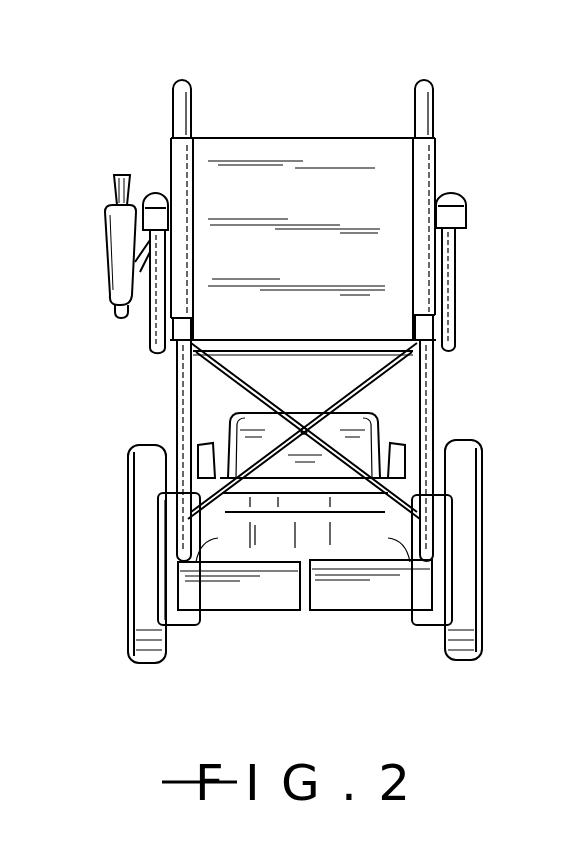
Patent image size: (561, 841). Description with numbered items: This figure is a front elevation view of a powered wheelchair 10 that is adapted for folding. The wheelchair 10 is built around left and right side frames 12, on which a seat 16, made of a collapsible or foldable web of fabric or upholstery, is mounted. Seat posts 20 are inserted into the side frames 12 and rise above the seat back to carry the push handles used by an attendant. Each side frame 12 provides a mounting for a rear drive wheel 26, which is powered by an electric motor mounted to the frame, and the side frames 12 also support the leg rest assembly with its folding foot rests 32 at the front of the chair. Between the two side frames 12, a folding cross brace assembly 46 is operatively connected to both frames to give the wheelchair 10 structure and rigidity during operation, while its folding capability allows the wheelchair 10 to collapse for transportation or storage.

The wheelchair 10 is at (388, 66).
The side frames 12 is at (176, 407).
The seat 16 is at (350, 338).
The seat posts 20 is at (172, 113).
The rear drive wheels 26 is at (128, 590).
The foot rests 32 is at (306, 612).
The folding cross brace assembly 46 is at (337, 390).